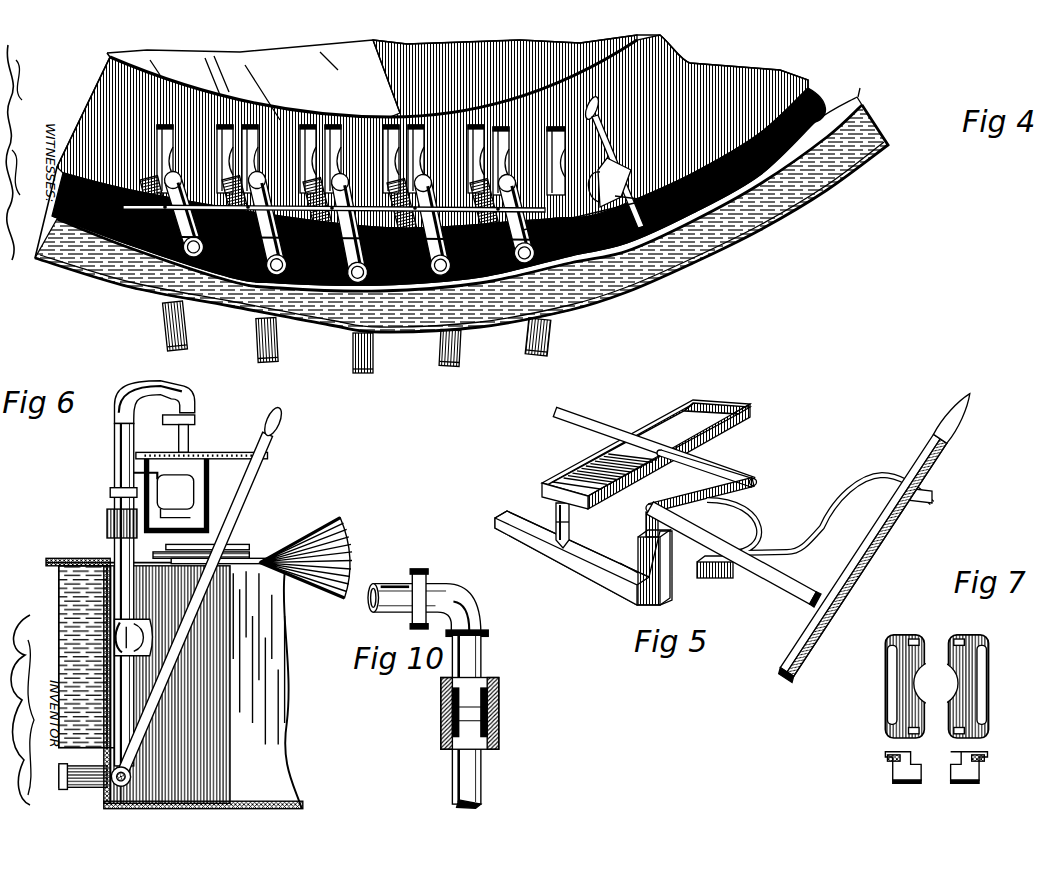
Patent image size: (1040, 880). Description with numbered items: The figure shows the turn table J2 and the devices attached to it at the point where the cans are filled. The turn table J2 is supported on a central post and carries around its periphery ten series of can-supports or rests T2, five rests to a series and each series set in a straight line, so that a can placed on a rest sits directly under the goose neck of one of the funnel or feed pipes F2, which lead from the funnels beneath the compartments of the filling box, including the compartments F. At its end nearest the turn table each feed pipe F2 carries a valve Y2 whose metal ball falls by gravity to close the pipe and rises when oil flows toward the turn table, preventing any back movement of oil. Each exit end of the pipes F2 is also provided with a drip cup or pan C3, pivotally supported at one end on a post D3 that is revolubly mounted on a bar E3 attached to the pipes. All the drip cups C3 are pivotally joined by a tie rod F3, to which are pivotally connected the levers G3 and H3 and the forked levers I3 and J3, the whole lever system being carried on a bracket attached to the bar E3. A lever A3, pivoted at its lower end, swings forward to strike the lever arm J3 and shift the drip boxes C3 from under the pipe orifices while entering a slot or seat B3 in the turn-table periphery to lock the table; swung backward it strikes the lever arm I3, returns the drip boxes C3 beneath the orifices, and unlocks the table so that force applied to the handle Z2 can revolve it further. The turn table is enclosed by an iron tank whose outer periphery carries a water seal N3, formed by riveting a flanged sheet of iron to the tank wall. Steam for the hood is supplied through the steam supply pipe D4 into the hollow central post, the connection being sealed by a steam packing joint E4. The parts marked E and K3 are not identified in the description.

In FIG. 4, the lever A3 is at (606, 143).
In FIG. 6, the lever A3 is at (191, 590).
In FIG. 5, the lever A3 is at (935, 462).
In FIG. 4, the slot or seat B3 is at (632, 164).
In FIG. 4, the drip cup or pan C3 is at (314, 200).
In FIG. 5, the drip cup or pan C3 is at (750, 406).
In FIG. 6, the post D3 is at (133, 466).
In FIG. 5, the post D3 is at (569, 532).
In FIG. 4, the connecting rod E is at (341, 222).
In FIG. 6, the bar E3 is at (148, 488).
In FIG. 5, the bar E3 is at (574, 564).
In FIG. 6, the compartments F is at (60, 765).
In FIG. 4, the funnel or feed pipes F2 is at (186, 350).
In FIG. 6, the funnel or feed pipes F2 is at (184, 400).
In FIG. 4, the tie rod F3 is at (349, 226).
In FIG. 5, the tie rod F3 is at (597, 420).
In FIG. 5, the lever G3 is at (723, 467).
In FIG. 5, the lever H3 is at (745, 490).
In FIG. 5, the forked lever I3 is at (768, 590).
In FIG. 6, the turn table J2 is at (326, 516).
In FIG. 6, the forked lever J3 is at (256, 448).
In FIG. 5, the forked lever J3 is at (845, 508).
In FIG. 4, the rail / tank K3 is at (469, 180).
In FIG. 6, the rail / tank K3 is at (103, 551).
In FIG. 4, the water seal N3 is at (759, 234).
In FIG. 6, the water seal N3 is at (55, 604).
In FIG. 6, the can-supports or rests T2 is at (222, 540).
In FIG. 7, the can-supports or rests T2 is at (938, 768).
In FIG. 6, the valve Y2 is at (141, 620).
In FIG. 6, the handle Z2 is at (205, 487).
In FIG. 10, the steam supply pipe D4 is at (392, 578).
In FIG. 10, the steam packing joint E4 is at (491, 686).